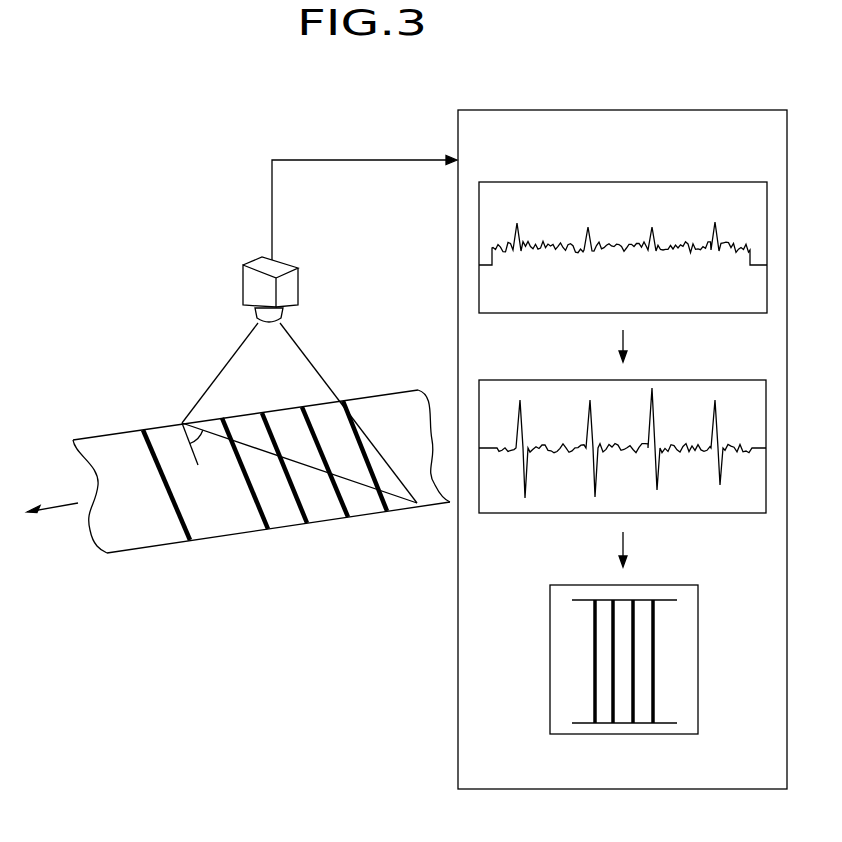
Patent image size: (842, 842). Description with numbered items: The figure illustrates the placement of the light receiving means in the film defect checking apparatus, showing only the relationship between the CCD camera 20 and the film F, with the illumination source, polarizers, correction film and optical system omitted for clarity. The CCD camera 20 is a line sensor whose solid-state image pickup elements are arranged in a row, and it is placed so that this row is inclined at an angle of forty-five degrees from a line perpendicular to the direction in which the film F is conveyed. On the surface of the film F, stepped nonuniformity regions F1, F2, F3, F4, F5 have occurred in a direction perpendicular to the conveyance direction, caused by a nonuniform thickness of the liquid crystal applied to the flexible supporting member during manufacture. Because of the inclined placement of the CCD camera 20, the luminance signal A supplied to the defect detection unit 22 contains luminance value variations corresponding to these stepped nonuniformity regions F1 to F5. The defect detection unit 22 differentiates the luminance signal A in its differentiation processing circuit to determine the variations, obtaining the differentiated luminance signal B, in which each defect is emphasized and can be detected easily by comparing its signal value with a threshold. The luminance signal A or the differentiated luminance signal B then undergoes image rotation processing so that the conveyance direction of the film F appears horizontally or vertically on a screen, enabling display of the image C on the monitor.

The CCD camera 20 is at (292, 292).
The defect detection unit 22 is at (457, 133).
The film F is at (392, 402).
The stepped nonuniformity region F1 is at (183, 541).
The stepped nonuniformity region F2 is at (265, 528).
The stepped nonuniformity region F3 is at (303, 522).
The stepped nonuniformity region F4 is at (342, 517).
The stepped nonuniformity region F5 is at (382, 512).
The luminance signal A is at (623, 247).
The differentiated luminance signal B is at (622, 446).
The image C is at (624, 641).